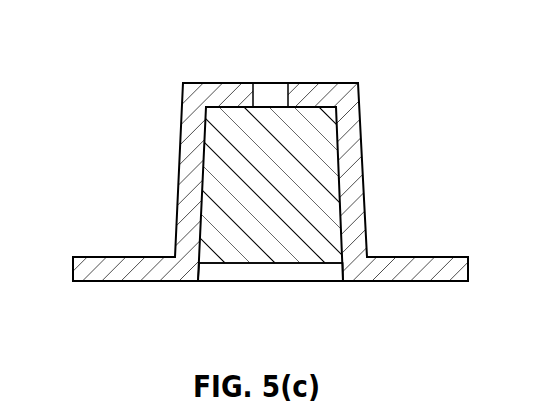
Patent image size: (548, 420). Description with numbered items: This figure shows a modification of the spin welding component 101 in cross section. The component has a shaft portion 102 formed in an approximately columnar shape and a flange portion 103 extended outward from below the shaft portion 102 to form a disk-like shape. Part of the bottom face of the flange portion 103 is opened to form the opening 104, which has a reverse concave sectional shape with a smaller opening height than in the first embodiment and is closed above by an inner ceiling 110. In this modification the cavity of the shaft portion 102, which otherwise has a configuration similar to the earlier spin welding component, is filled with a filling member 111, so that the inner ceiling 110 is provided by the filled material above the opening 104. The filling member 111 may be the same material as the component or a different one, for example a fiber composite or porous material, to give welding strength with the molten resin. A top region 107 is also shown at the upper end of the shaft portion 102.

The spin welding component 101 is at (163, 69).
The shaft portion 102 is at (179, 153).
The flange portion 103 is at (122, 196).
The opening 104 is at (244, 272).
The top opening portion 107 is at (280, 92).
The inner ceiling 110 is at (312, 265).
The filling member 111 is at (303, 177).